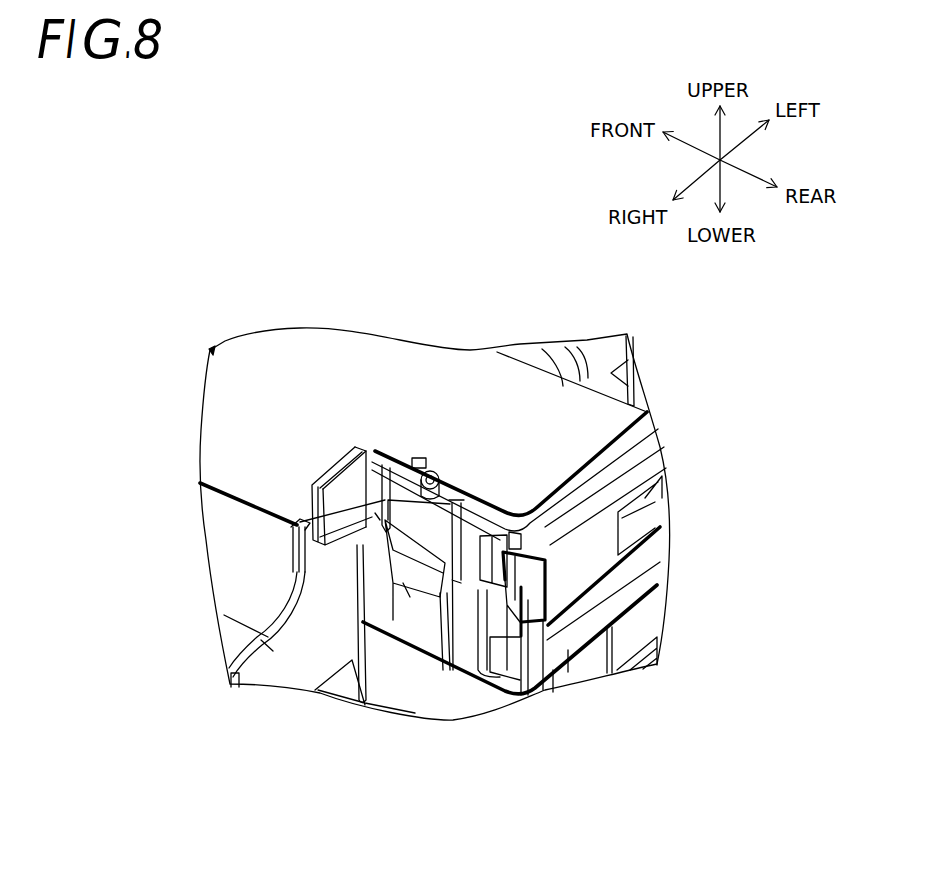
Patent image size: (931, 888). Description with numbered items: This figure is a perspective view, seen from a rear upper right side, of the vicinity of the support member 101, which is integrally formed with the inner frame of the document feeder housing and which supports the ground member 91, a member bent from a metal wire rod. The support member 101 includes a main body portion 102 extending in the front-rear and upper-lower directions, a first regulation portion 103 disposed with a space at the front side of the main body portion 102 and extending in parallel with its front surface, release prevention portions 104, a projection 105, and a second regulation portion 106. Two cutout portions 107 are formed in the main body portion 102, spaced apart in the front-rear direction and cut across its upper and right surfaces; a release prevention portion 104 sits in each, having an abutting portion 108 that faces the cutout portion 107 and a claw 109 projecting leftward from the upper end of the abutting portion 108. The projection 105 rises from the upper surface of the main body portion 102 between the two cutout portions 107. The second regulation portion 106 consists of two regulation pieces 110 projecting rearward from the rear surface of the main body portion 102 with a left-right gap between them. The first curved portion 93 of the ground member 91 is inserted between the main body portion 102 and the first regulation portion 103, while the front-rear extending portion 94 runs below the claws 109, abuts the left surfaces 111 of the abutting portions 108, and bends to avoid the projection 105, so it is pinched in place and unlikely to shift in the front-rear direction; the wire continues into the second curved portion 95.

The ground member 91 is at (389, 464).
The first curved portion 93 is at (417, 452).
The front-rear extending portion 94 is at (392, 521).
The second curved portion 95 is at (507, 538).
The support member 101 is at (468, 484).
The main body portion 102 is at (368, 630).
The first regulation portion 103 is at (347, 458).
The release prevention portions 104 is at (335, 544).
The projection 105 is at (432, 473).
The second regulation portion 106 is at (534, 630).
The cutout portions 107 is at (368, 455).
The abutting portion 108 is at (370, 496).
The claw 109 is at (355, 458).
The regulation pieces 110 is at (550, 603).
The left surfaces 111 is at (375, 515).